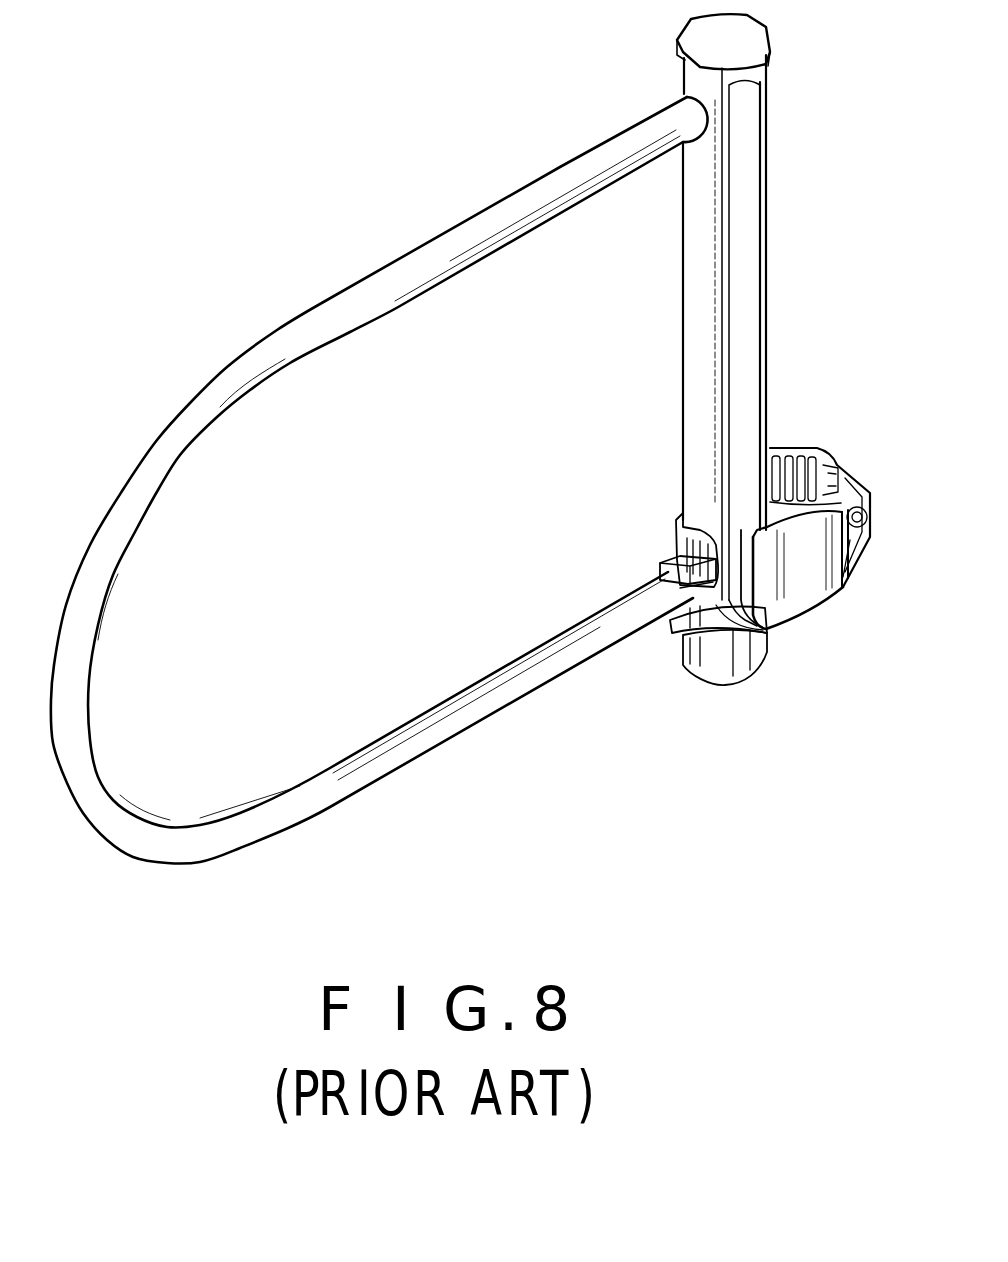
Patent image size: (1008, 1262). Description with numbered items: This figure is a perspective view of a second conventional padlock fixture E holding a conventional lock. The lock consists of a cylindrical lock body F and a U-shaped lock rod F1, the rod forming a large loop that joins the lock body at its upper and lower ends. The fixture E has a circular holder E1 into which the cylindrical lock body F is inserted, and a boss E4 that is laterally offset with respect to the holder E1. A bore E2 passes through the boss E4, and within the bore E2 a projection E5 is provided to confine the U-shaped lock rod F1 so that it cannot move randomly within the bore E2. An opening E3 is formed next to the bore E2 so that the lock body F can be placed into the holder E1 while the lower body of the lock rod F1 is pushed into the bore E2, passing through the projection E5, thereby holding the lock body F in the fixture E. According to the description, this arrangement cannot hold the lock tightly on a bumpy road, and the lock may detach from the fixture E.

The cylindrical lock body F is at (757, 307).
The U-shaped lock rod F1 is at (580, 650).
The padlock fixture E is at (807, 590).
The circular holder E1 is at (682, 520).
The bore E2 is at (720, 618).
The opening E3 is at (733, 618).
The boss E4 is at (663, 570).
The projection E5 is at (677, 635).